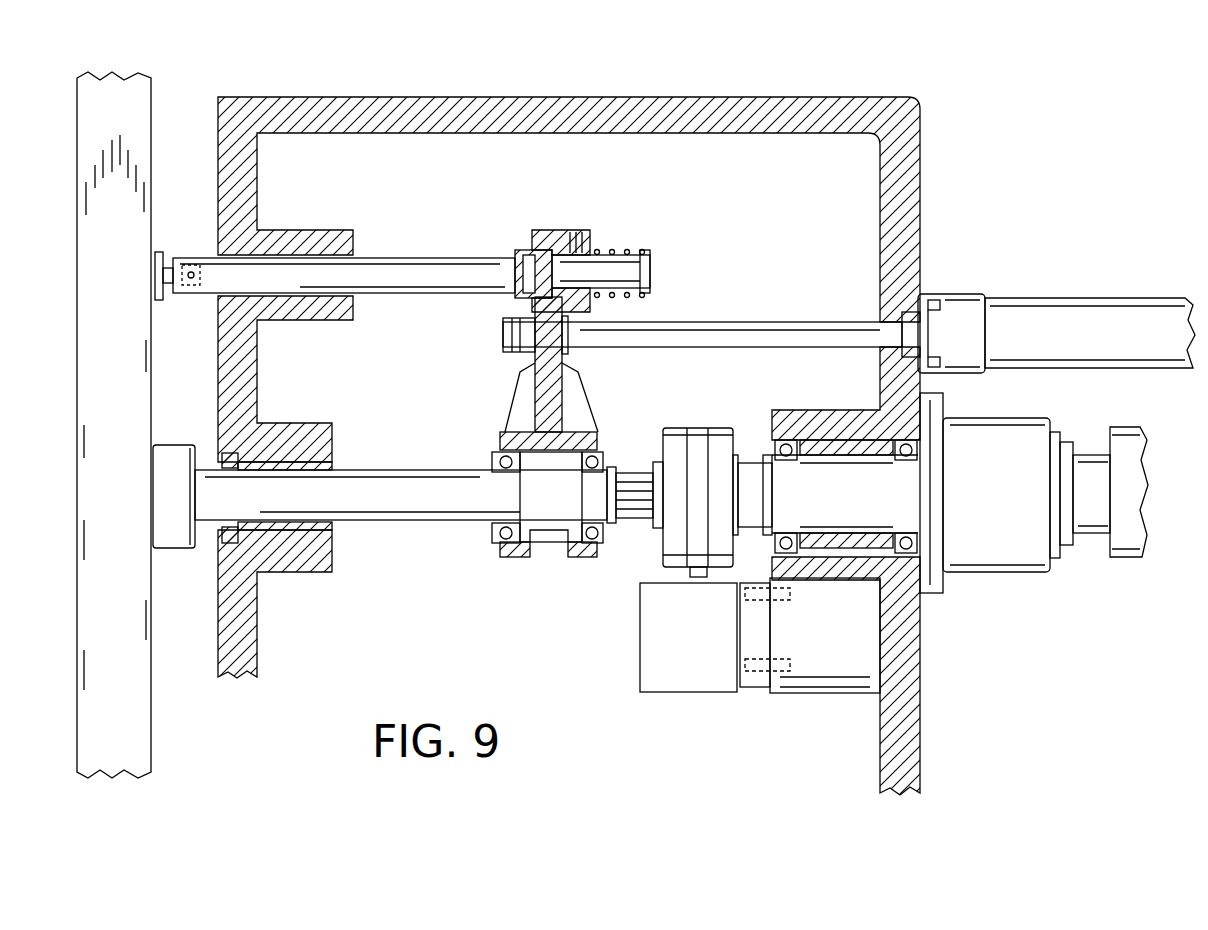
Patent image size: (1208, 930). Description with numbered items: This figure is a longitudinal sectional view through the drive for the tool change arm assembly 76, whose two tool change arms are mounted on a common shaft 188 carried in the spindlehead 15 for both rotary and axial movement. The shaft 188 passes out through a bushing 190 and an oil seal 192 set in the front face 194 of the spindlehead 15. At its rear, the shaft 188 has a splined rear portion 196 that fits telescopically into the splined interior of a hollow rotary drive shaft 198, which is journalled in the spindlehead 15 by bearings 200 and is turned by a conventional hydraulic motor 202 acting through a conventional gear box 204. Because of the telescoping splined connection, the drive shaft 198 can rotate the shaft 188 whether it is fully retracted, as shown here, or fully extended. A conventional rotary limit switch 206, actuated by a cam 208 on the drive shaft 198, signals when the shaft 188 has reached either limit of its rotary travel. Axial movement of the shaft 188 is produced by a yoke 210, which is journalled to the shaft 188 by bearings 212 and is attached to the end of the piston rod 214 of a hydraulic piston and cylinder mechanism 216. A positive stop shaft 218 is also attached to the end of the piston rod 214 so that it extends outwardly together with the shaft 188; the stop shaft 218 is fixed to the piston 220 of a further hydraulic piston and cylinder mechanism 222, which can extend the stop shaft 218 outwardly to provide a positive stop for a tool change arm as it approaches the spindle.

The spindlehead 15 is at (440, 108).
The tool change arm assembly 76 is at (130, 128).
The common shaft 188 is at (385, 505).
The bushing 190 is at (335, 462).
The oil seal 192 is at (222, 535).
The front face 194 is at (235, 388).
The splined rear portion 196 is at (632, 478).
The hollow rotary drive shaft 198 is at (828, 490).
The bearings 200 is at (915, 548).
The hydraulic motor 202 is at (1125, 460).
The gear box 204 is at (1032, 575).
The rotary limit switch 206 is at (672, 658).
The cam 208 is at (697, 440).
The yoke 210 is at (515, 400).
The bearings 212 is at (498, 540).
The piston rod 214 is at (722, 335).
The hydraulic piston and cylinder mechanism 216 is at (1070, 318).
The positive stop shaft 218 is at (420, 270).
The piston 220 is at (515, 278).
The hydraulic piston and cylinder mechanism 222 is at (590, 280).